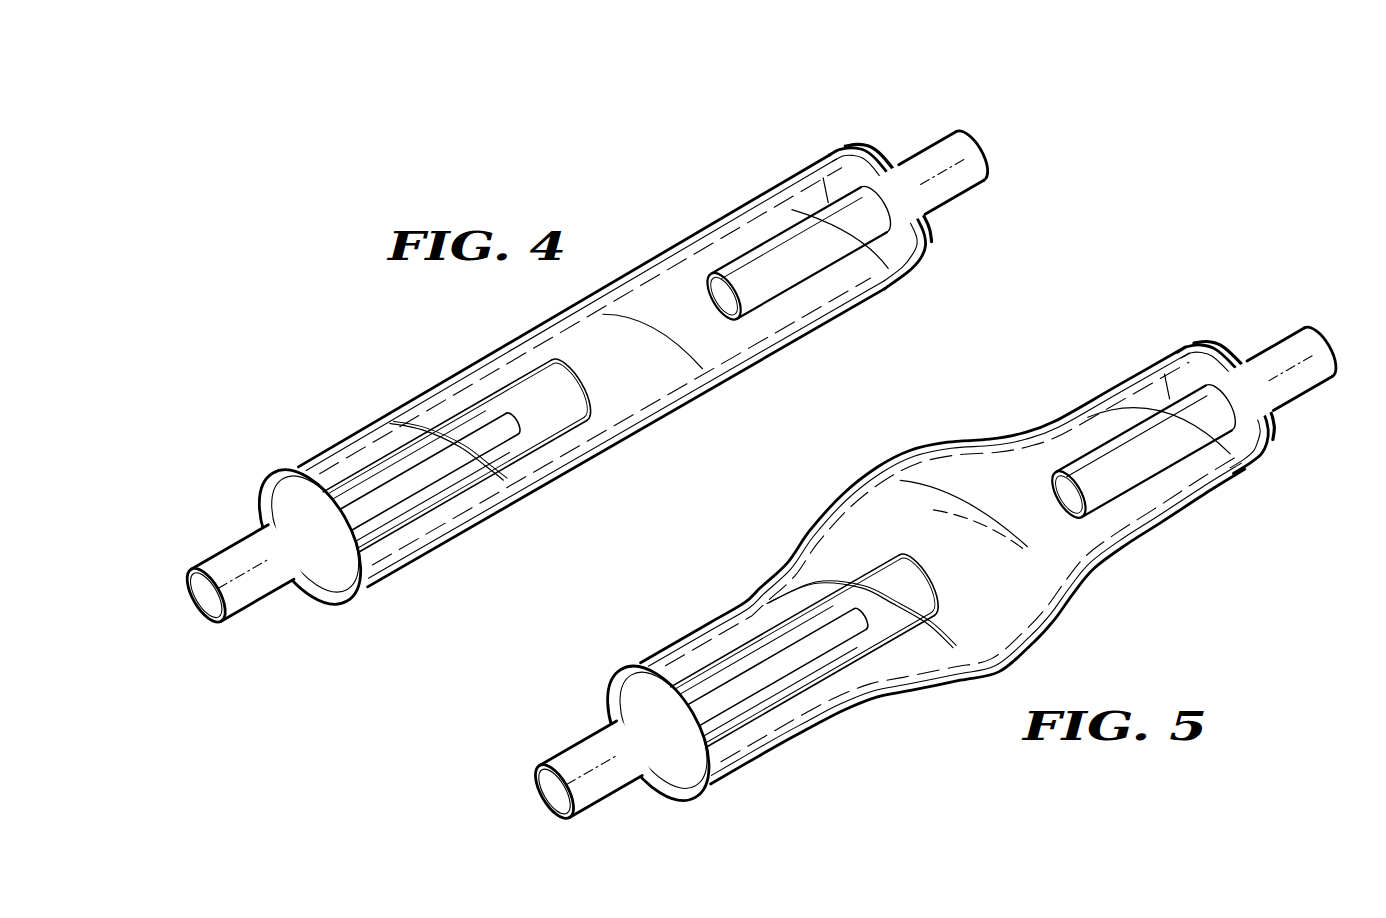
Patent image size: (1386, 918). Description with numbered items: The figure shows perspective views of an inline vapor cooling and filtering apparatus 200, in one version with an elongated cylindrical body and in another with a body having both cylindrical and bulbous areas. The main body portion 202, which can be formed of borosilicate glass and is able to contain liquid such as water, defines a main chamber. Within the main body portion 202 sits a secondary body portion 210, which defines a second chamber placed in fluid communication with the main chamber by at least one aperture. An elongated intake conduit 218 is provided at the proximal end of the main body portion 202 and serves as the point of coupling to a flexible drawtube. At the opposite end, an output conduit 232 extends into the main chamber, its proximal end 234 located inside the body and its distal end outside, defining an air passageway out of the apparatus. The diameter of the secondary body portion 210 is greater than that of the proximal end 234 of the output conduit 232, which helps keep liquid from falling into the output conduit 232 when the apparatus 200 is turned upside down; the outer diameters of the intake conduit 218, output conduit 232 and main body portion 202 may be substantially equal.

In FIG. 4, the inline vapor cooling and filtering apparatus 200 is at (483, 298).
In FIG. 5, the inline vapor cooling and filtering apparatus 200 is at (1127, 693).
In FIG. 4, the main body portion 202 is at (772, 188).
In FIG. 5, the main body portion 202 is at (947, 443).
In FIG. 4, the secondary body portion 210 is at (463, 397).
In FIG. 5, the secondary body portion 210 is at (800, 602).
In FIG. 4, the intake conduit 218 is at (233, 548).
In FIG. 5, the intake conduit 218 is at (572, 746).
In FIG. 4, the output conduit 232 is at (924, 151).
In FIG. 5, the output conduit 232 is at (1270, 343).
In FIG. 4, the proximal end of the output conduit 234 is at (703, 265).
In FIG. 5, the proximal end of the output conduit 234 is at (1052, 470).